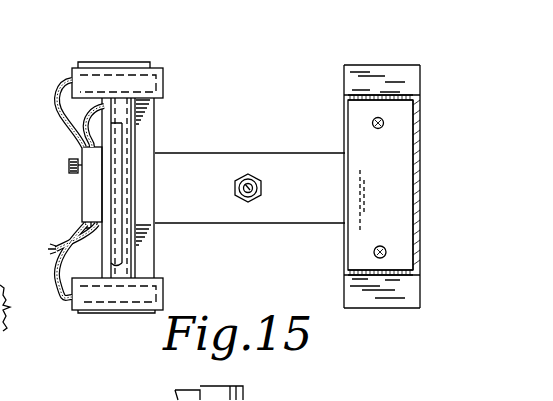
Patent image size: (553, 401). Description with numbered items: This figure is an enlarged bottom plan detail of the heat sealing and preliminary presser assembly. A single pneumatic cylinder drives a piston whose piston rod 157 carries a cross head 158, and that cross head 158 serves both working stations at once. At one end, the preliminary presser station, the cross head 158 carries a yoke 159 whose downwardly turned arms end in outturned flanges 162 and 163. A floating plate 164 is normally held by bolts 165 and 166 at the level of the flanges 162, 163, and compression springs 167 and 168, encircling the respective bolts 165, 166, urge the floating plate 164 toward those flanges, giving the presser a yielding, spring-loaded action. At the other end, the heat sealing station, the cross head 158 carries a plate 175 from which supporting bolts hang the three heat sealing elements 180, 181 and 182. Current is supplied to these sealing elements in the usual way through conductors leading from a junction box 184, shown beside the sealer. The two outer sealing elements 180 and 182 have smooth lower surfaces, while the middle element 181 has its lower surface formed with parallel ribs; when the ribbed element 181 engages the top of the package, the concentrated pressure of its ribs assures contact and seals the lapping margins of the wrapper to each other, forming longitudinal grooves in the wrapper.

The piston rod 157 is at (250, 183).
The cross head 158 is at (317, 208).
The yoke 159 is at (427, 240).
The outturned flange 162 is at (395, 82).
The outturned flange 163 is at (405, 298).
The floating plate 164 is at (405, 205).
The bolt 165 is at (385, 123).
The bolt 166 is at (388, 252).
The compression spring 167 is at (383, 128).
The compression spring 168 is at (386, 256).
The plate 175 is at (153, 242).
The heat sealing element 180 is at (153, 290).
The heat sealing element 181 is at (128, 135).
The heat sealing element 182 is at (150, 80).
The junction box 184 is at (88, 200).